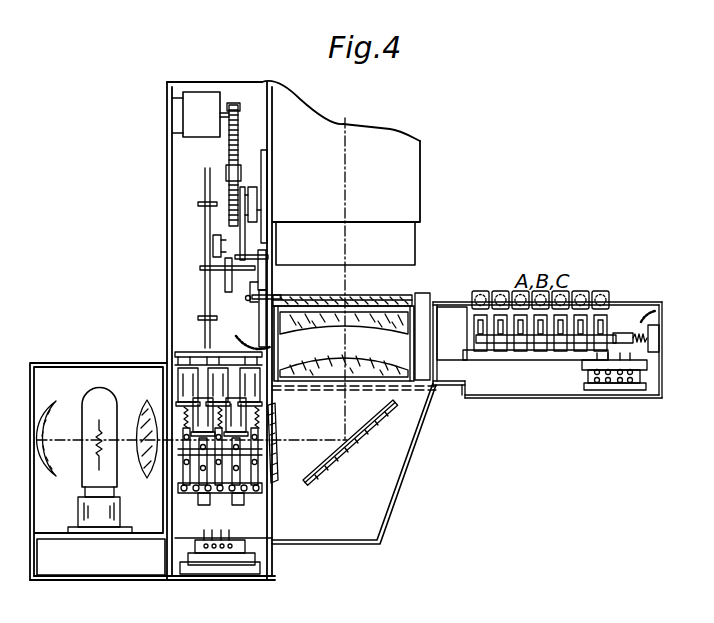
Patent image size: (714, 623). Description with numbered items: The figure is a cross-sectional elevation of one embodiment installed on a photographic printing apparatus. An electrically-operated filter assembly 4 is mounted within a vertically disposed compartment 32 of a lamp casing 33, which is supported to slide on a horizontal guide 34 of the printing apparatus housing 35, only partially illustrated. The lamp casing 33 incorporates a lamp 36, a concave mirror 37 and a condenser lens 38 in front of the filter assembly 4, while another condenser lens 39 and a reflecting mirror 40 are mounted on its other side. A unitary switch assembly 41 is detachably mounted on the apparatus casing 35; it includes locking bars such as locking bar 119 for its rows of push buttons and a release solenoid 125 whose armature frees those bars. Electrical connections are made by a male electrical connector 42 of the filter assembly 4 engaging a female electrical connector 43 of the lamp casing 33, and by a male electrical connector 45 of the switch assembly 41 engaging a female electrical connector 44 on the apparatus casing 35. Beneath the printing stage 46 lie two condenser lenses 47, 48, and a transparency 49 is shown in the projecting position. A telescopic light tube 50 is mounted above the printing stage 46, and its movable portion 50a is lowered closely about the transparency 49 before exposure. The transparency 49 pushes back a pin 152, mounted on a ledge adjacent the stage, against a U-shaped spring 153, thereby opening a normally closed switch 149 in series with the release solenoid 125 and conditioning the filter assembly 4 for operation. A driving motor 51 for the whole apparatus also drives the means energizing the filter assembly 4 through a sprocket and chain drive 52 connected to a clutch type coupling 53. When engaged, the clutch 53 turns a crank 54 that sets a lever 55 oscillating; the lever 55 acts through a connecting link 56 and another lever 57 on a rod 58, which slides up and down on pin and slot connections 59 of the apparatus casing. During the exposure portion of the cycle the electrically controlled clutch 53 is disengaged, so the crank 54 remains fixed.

The filter assembly 4 is at (265, 530).
The compartment 32 is at (167, 494).
The lamp casing 33 is at (128, 570).
The horizontal guide 34 is at (408, 393).
The printing apparatus housing 35 is at (441, 378).
The lamp 36 is at (100, 393).
The concave mirror 37 is at (48, 410).
The condenser lens 38 is at (146, 410).
The condenser lens 39 is at (273, 464).
The reflecting mirror 40 is at (338, 434).
The switch assembly 41 is at (447, 312).
The male electrical connector 42 is at (200, 546).
The female electrical connector 43 is at (208, 574).
The female electrical connector 44 is at (613, 383).
The male electrical connector 45 is at (582, 369).
The printing stage 46 is at (412, 305).
The condenser lens 47 is at (367, 357).
The condenser lens 48 is at (372, 320).
The transparency 49 is at (360, 300).
The telescopic light tube 50 is at (409, 198).
The movable portion 50a is at (408, 247).
The driving motor 51 is at (203, 100).
The sprocket and chain drive 52 is at (233, 160).
The clutch type coupling 53 is at (242, 168).
The crank 54 is at (256, 212).
The lever 55 is at (258, 270).
The connecting link 56 is at (248, 300).
The lever 57 is at (225, 270).
The rod 58 is at (213, 244).
The pin and slot connections 59 is at (207, 202).
The locking bar 119 is at (527, 342).
The release solenoid 125 is at (660, 327).
The switch 149 is at (259, 320).
The pin 152 is at (266, 294).
The U-shaped spring 153 is at (262, 283).